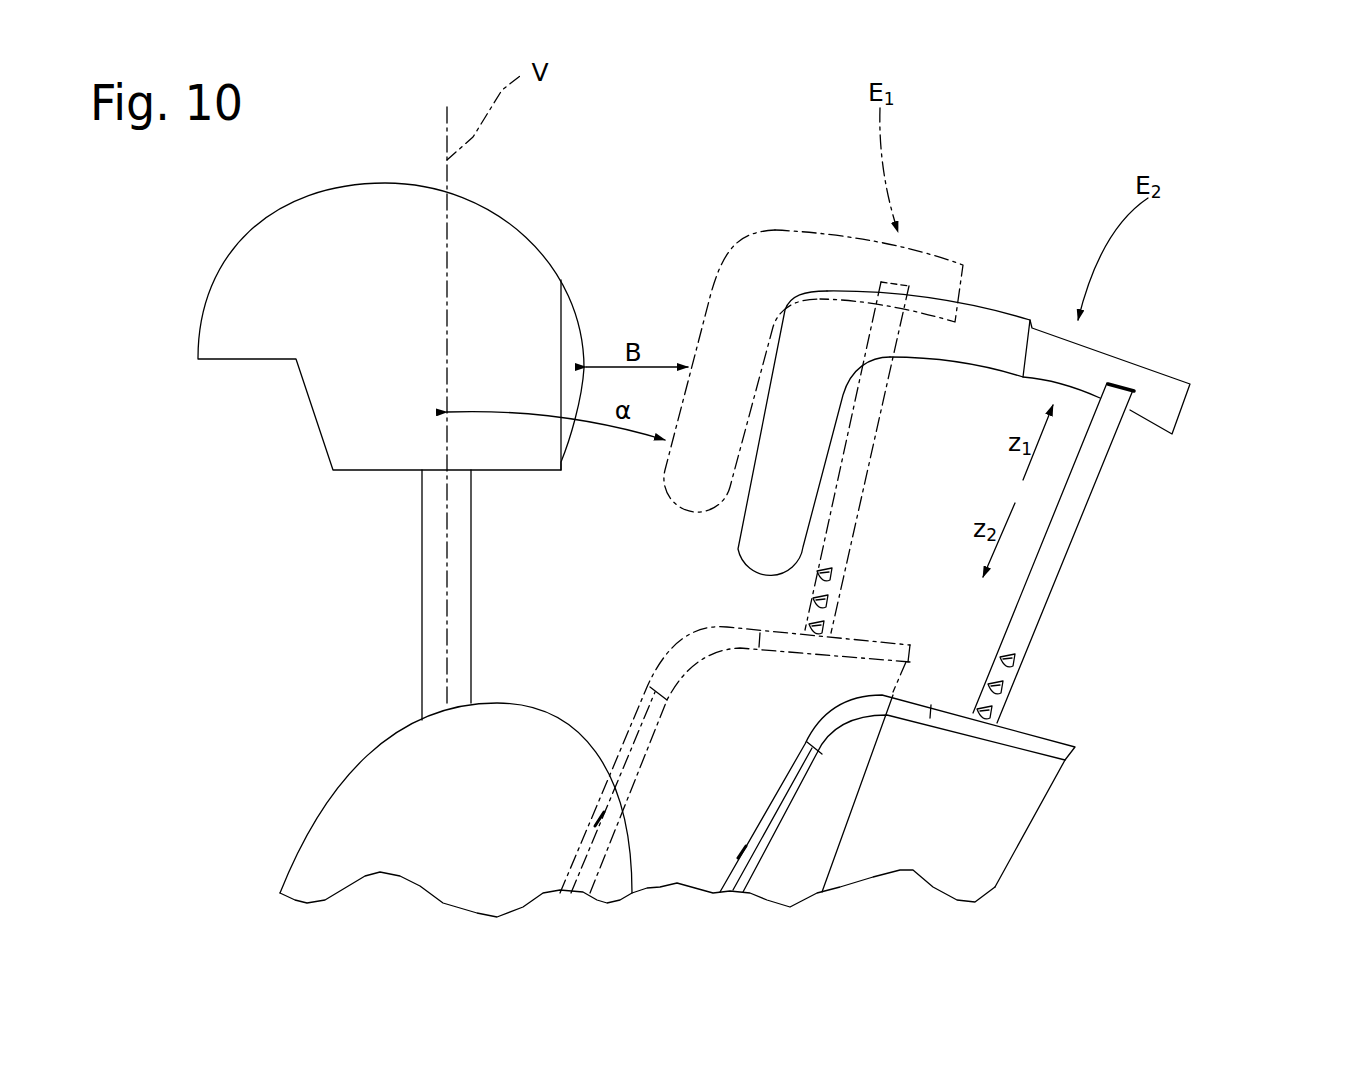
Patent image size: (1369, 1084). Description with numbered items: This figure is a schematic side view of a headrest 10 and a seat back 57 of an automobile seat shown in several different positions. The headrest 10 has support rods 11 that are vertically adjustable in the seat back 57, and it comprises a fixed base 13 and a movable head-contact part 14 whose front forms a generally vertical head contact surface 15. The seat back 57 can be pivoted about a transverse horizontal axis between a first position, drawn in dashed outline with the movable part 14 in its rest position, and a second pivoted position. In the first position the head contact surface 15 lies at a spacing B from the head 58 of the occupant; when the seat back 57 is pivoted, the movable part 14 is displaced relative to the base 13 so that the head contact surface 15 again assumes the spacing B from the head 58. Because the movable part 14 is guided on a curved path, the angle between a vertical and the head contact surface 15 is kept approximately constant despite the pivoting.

The headrest 10 is at (803, 208).
The support rods 11 is at (853, 463).
The fixed base 13 is at (1158, 397).
The movable head-contact part 14 is at (925, 280).
The head contact surface 15 is at (703, 307).
The seat back 57 is at (850, 688).
The head 58 is at (493, 277).